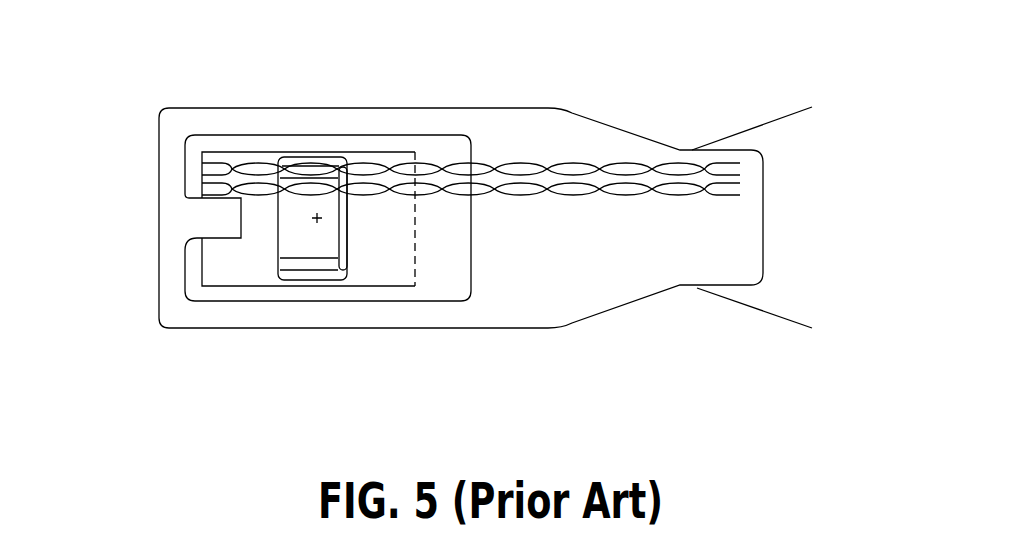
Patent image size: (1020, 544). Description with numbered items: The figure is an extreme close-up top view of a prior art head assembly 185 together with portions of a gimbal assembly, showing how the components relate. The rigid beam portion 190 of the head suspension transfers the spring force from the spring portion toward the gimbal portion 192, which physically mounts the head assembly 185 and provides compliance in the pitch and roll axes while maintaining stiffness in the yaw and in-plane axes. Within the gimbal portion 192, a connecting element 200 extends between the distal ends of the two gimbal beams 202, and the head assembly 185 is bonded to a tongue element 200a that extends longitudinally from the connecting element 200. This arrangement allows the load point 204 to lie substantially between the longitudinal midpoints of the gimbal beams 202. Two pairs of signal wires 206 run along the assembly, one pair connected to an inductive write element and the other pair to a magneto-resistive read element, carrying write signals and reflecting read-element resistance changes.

The head assembly 185 is at (247, 258).
The rigid beam portion 190 is at (779, 142).
The gimbal portion 192 is at (568, 258).
The connecting element 200 is at (175, 218).
The tongue element 200a is at (222, 215).
The gimbal beams 202 is at (395, 123).
The load point 204 is at (317, 218).
The signal wires 206 is at (593, 185).